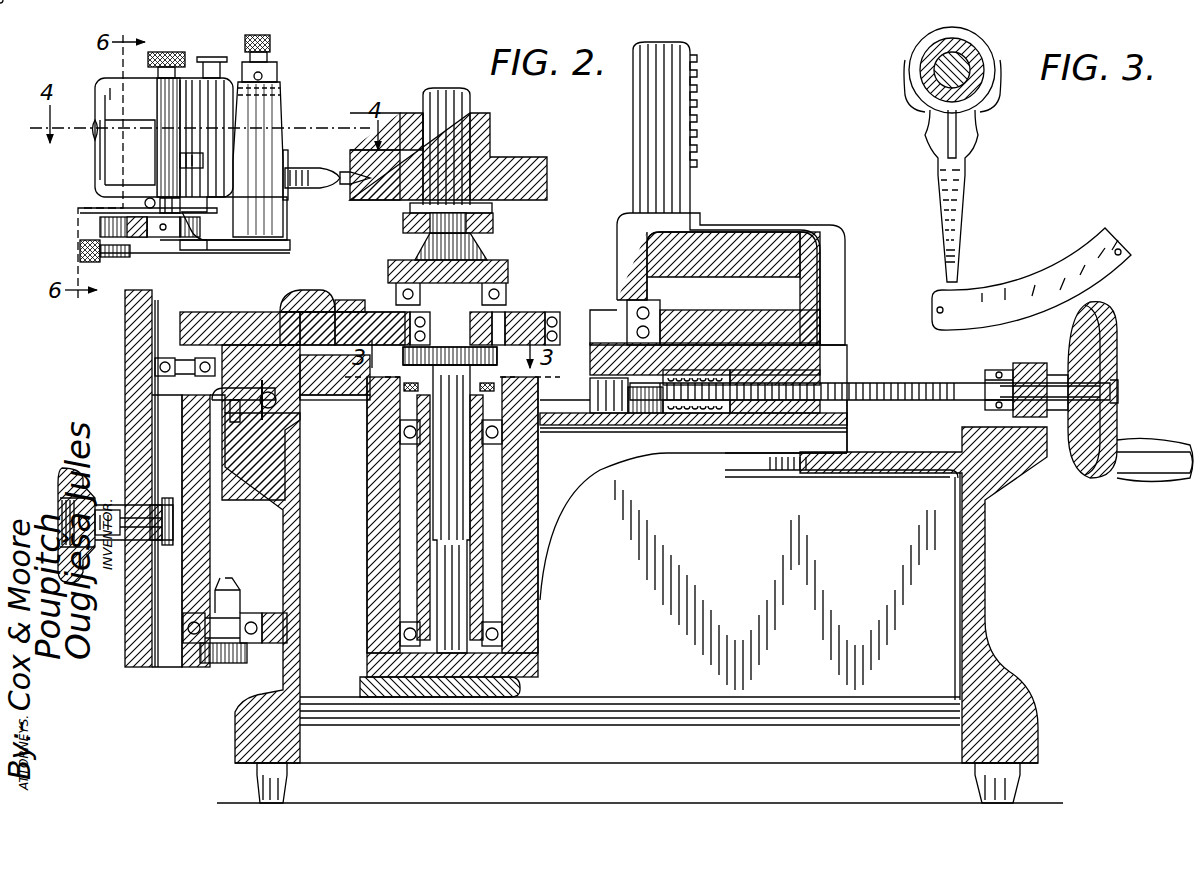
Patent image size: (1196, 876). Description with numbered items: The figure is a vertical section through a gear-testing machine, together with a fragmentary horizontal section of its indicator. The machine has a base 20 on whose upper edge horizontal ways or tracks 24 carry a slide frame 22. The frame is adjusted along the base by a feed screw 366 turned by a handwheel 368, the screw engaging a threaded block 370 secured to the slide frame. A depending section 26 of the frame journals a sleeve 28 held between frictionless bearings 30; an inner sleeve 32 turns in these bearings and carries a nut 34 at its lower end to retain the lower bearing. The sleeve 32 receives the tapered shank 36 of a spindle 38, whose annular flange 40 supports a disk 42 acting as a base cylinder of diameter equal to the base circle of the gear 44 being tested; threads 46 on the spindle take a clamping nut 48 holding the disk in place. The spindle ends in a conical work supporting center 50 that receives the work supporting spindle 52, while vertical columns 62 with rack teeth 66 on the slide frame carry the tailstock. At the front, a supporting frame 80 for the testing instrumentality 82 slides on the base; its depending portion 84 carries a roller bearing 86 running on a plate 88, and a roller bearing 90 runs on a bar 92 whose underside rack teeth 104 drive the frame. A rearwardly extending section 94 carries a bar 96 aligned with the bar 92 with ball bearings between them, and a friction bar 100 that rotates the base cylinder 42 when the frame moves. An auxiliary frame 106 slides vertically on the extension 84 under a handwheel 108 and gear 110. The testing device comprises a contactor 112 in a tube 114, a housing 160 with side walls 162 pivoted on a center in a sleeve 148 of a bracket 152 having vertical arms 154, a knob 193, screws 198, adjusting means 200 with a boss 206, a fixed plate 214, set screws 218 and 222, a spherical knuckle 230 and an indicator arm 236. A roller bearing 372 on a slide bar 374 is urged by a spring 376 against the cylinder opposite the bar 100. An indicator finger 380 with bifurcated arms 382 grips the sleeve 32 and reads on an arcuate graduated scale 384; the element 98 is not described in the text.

In FIG. 2, the base 20 is at (990, 648).
In FIG. 2, the slide frame 22 is at (850, 272).
In FIG. 2, the ways or tracks 24 is at (876, 445).
In FIG. 2, the depending section 26 is at (541, 577).
In FIG. 2, the sleeve 28 is at (540, 545).
In FIG. 2, the frictionless bearings 30 is at (502, 450).
In FIG. 2, the sleeve 32 is at (483, 475).
In FIG. 3, the sleeve 32 is at (922, 84).
In FIG. 2, the nut 34 is at (540, 660).
In FIG. 2, the tapered shank 36 is at (458, 505).
In FIG. 3, the tapered shank 36 is at (950, 72).
In FIG. 2, the spindle 38 is at (464, 357).
In FIG. 2, the annular flange 40 is at (410, 358).
In FIG. 2, the cylindrical member, ring or disk 42 is at (515, 312).
In FIG. 2, the gear 44 is at (505, 165).
In FIG. 2, the threaded portion 46 is at (480, 268).
In FIG. 2, the clamping nut 48 is at (390, 293).
In FIG. 2, the conical work supporting center 50 is at (470, 240).
In FIG. 2, the work supporting spindle 52 is at (468, 102).
In FIG. 2, the vertical posts or columns 62 is at (656, 63).
In FIG. 2, the rack teeth 66 is at (690, 90).
In FIG. 2, the supporting frame 80 is at (176, 432).
In FIG. 2, the testing instrumentality or device 82 is at (296, 103).
In FIG. 2, the depending portion 84 is at (210, 505).
In FIG. 2, the roller bearing 86 is at (192, 645).
In FIG. 2, the plate or bar 88 is at (262, 630).
In FIG. 2, the roller bearing 90 is at (160, 368).
In FIG. 2, the bar 92 is at (250, 400).
In FIG. 2, the rearwardly extending portion or section 94 is at (306, 296).
In FIG. 2, the bar 96 is at (320, 408).
In FIG. 2, the dome 98 is at (283, 298).
In FIG. 2, the bar 100 is at (352, 314).
In FIG. 2, the rack teeth 104 is at (240, 432).
In FIG. 2, the auxiliary frame 106 is at (124, 393).
In FIG. 2, the handwheel 108 is at (75, 582).
In FIG. 2, the gear 110 is at (160, 483).
In FIG. 2, the contactor 112 is at (340, 170).
In FIG. 2, the block or tube 114 is at (295, 170).
In FIG. 2, the sleeve 148 is at (277, 62).
In FIG. 2, the bracket 152 is at (275, 247).
In FIG. 2, the vertically extending arms 154 is at (270, 218).
In FIG. 2, the housing or casting 160 is at (108, 85).
In FIG. 2, the side walls 162 is at (208, 188).
In FIG. 2, the flanged knob 193 is at (210, 62).
In FIG. 2, the screws 198 is at (93, 135).
In FIG. 2, the adjusting means 200 is at (158, 52).
In FIG. 2, the boss 206 is at (172, 143).
In FIG. 2, the fixed plate 214 is at (210, 240).
In FIG. 2, the set screw 218 is at (80, 251).
In FIG. 2, the set screw 222 is at (205, 160).
In FIG. 2, the spherical element or knuckle 230 is at (110, 208).
In FIG. 2, the arm 236 is at (128, 228).
In FIG. 2, the feed screw 366 is at (875, 383).
In FIG. 2, the handwheel 368 is at (1110, 425).
In FIG. 2, the threaded block 370 is at (752, 370).
In FIG. 2, the roller bearing 372 is at (661, 312).
In FIG. 2, the slide bar 374 is at (668, 370).
In FIG. 2, the spring 376 is at (696, 410).
In FIG. 3, the indicator finger 380 is at (958, 193).
In FIG. 2, the arms 382 is at (403, 388).
In FIG. 3, the arms 382 is at (918, 107).
In FIG. 3, the arcuate graduated scale 384 is at (1100, 277).